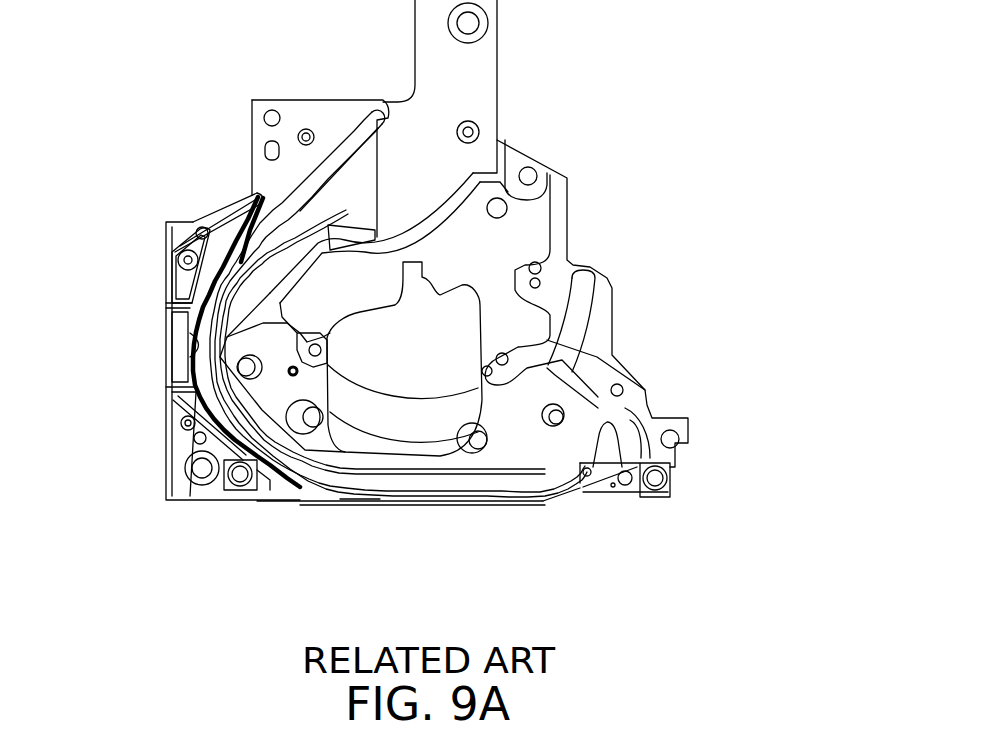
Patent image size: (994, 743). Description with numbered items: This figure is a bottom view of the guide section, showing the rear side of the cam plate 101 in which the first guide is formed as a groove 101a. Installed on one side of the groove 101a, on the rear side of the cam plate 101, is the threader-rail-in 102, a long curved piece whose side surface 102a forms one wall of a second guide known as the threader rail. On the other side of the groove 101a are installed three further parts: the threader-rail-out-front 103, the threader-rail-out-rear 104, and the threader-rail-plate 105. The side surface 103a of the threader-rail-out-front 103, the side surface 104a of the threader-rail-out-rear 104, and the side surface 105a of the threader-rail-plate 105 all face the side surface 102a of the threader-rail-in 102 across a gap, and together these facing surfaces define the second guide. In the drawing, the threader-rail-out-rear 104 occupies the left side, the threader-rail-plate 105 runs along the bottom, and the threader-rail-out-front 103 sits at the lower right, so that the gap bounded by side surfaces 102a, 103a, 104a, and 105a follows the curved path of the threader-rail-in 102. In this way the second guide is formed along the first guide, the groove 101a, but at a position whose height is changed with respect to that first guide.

The cam plate 101 is at (653, 425).
The groove 101a is at (612, 438).
The threader-rail-in 102 is at (481, 252).
The side surface 102a is at (263, 497).
The threader-rail-out-front 103 is at (613, 504).
The side surface 103a is at (550, 500).
The threader-rail-out-rear 104 is at (163, 442).
The side surface 104a is at (197, 343).
The threader-rail-plate 105 is at (437, 505).
The side surface 105a is at (357, 497).